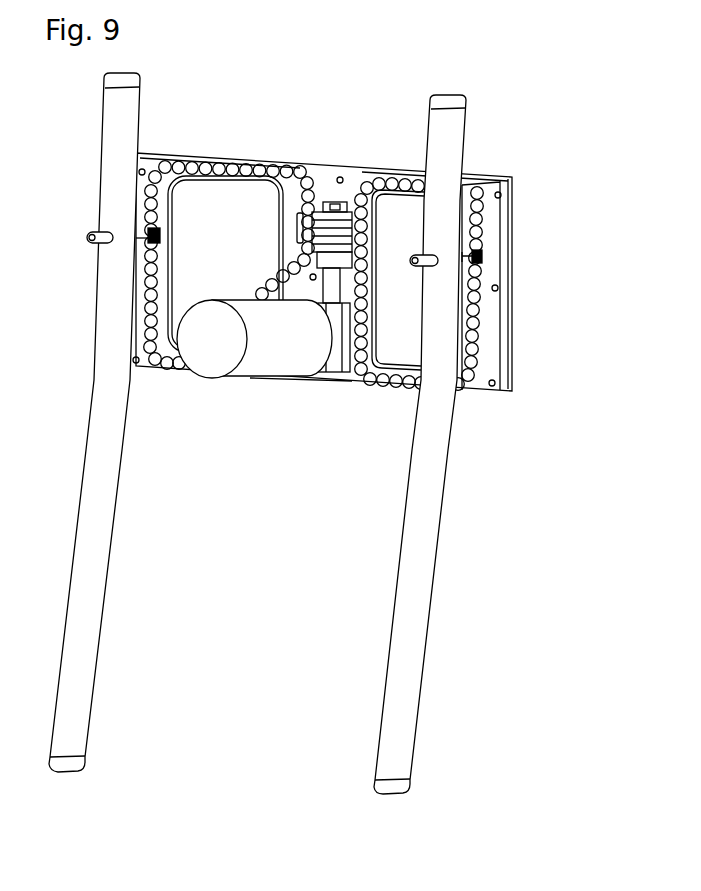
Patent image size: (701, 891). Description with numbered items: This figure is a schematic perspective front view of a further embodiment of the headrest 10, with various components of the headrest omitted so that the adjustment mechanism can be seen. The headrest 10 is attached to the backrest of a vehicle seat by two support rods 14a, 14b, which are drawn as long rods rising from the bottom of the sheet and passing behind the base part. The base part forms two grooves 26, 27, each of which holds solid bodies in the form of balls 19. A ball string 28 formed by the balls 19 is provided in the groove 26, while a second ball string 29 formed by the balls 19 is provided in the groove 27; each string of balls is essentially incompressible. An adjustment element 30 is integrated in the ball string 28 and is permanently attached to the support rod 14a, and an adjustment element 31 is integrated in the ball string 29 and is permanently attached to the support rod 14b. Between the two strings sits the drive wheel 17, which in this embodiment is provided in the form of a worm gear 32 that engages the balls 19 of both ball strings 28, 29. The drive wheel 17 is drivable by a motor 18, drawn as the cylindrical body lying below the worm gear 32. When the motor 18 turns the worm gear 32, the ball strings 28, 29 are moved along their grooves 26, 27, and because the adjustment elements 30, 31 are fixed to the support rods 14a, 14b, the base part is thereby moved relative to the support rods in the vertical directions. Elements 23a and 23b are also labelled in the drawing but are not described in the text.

The headrest 10 is at (466, 71).
The support rod 14a is at (88, 618).
The support rod 14b is at (408, 640).
The drive wheel 17 is at (332, 270).
The motor 18 is at (268, 348).
The balls 19 is at (227, 158).
The actuator head 23a is at (324, 200).
The pin 23b is at (406, 264).
The groove 26 is at (161, 166).
The groove 27 is at (488, 270).
The ball string 28 is at (198, 158).
The ball string 29 is at (486, 310).
The adjustment element 30 is at (142, 233).
The adjustment element 31 is at (487, 249).
The worm gear 32 is at (345, 224).